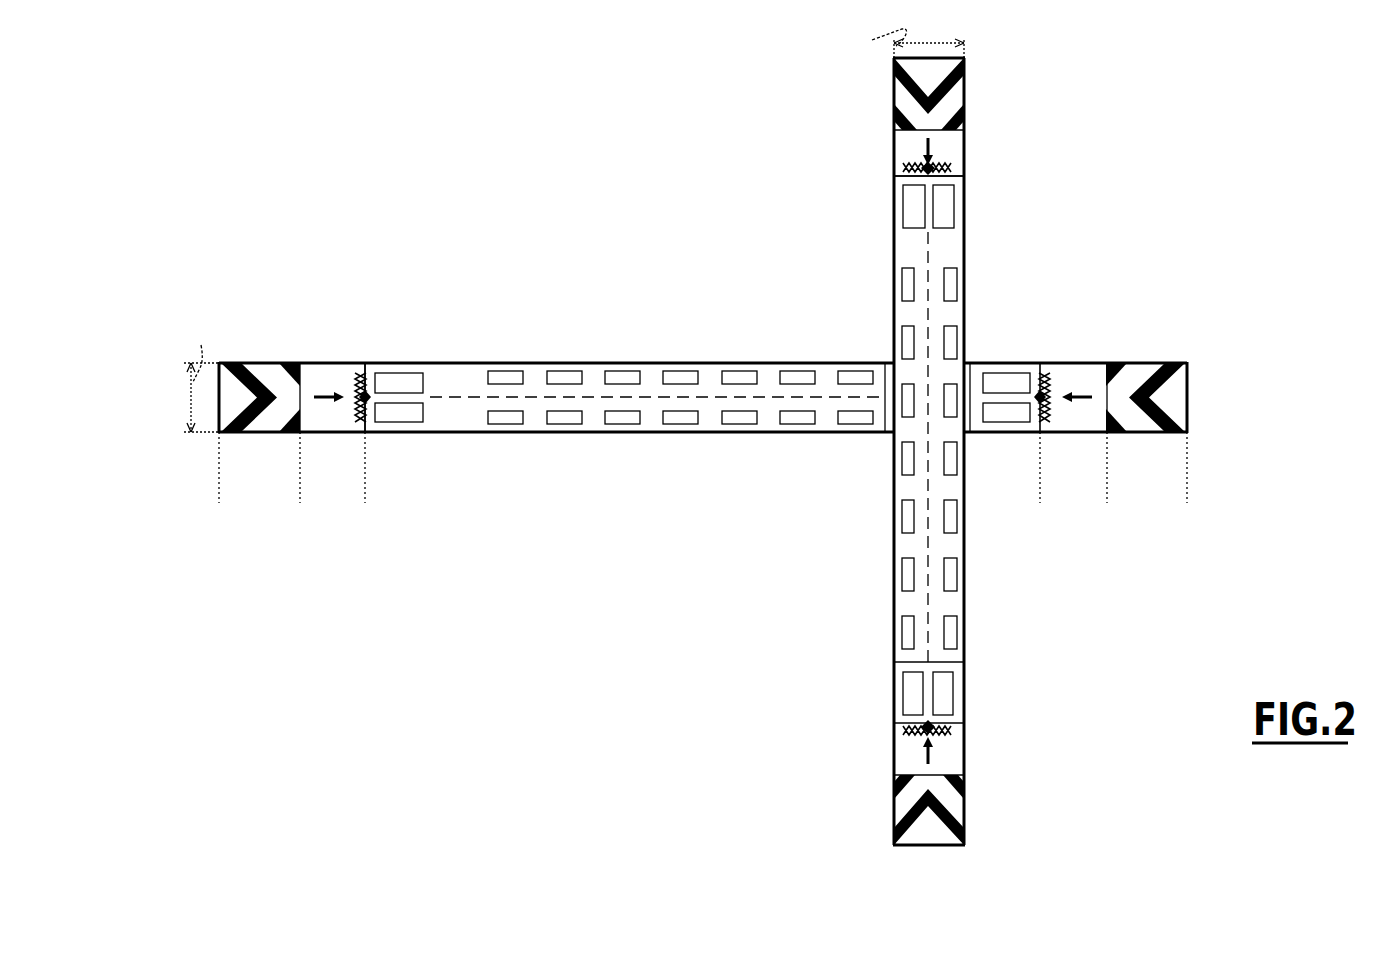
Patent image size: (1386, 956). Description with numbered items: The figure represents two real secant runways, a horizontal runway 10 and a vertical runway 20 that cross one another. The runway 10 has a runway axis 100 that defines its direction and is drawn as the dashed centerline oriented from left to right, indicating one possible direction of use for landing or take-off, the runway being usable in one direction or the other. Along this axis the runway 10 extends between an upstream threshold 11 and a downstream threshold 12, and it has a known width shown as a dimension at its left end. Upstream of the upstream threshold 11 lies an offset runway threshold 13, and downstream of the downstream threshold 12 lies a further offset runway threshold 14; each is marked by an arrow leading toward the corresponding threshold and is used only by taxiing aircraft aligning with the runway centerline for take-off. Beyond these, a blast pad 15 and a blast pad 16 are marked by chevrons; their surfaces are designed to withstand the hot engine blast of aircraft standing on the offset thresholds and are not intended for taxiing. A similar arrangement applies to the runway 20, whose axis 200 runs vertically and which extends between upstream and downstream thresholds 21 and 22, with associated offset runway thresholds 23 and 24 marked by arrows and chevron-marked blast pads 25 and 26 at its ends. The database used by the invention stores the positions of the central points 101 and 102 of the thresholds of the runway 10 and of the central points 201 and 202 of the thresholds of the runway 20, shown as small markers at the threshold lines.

The runway 10 is at (365, 503).
The upstream threshold 11 is at (365, 432).
The downstream threshold 12 is at (1040, 432).
The offset runway threshold 13 is at (365, 503).
The offset runway threshold 14 is at (1107, 503).
The blast pad 15 is at (300, 503).
The blast pad 16 is at (1187, 503).
The runway 20 is at (966, 313).
The upstream threshold 21 is at (964, 723).
The downstream threshold 22 is at (964, 177).
The offset runway threshold 23 is at (948, 758).
The offset runway threshold 24 is at (948, 156).
The blast pad 25 is at (950, 808).
The blast pad 26 is at (950, 91).
The runway axis 100 is at (586, 386).
The central point 101 is at (395, 382).
The central point 102 is at (1015, 384).
The runway axis 200 is at (930, 250).
The central point 201 is at (914, 712).
The central point 202 is at (912, 184).